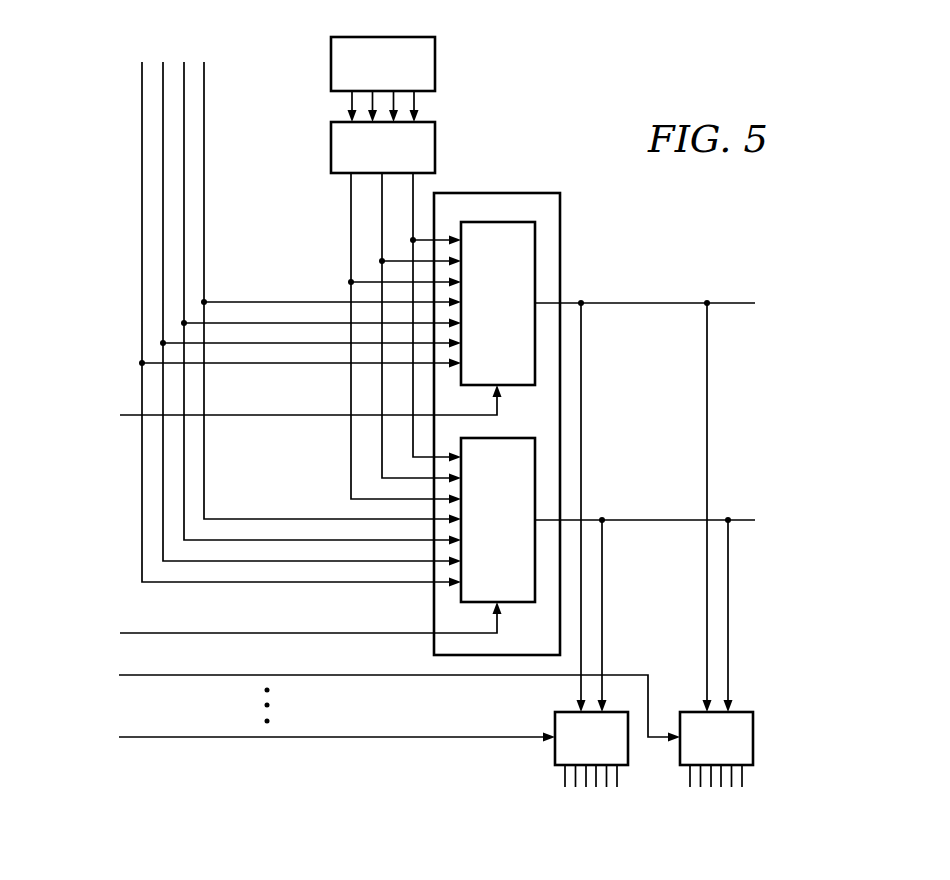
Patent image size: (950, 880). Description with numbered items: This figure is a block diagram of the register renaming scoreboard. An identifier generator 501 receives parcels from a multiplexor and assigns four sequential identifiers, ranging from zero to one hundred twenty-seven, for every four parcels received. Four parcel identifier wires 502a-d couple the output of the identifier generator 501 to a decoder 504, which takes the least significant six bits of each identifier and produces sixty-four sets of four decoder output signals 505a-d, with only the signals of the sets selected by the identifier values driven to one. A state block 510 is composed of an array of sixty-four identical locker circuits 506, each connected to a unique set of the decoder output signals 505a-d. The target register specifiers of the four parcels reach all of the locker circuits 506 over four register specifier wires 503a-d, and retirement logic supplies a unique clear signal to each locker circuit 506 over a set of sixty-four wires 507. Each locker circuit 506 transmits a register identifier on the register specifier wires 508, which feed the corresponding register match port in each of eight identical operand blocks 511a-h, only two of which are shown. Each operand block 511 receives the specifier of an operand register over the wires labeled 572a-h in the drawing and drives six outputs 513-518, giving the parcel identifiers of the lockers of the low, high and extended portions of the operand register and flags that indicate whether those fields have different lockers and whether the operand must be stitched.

The identifier generator 501 is at (402, 77).
The parcel identifier wires 502a-d is at (442, 98).
The register specifier wires 503a-d is at (210, 53).
The decoder 504 is at (402, 160).
The decoder output signals 505a-d is at (327, 205).
The locker circuit 506 is at (517, 314).
The wires 507 is at (114, 412).
The register specifier wires 508 is at (584, 286).
The state block 510 is at (497, 193).
The operand block 511 is at (610, 751).
The operand blocks 511a-h is at (717, 774).
The operand block outputs 513-518 is at (654, 800).
The enable lines 572a-h is at (114, 672).